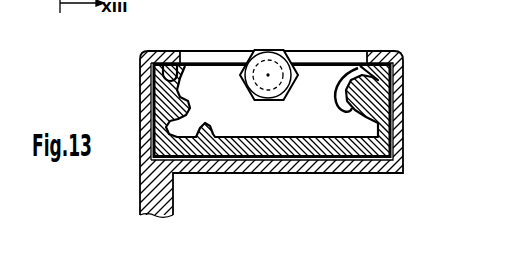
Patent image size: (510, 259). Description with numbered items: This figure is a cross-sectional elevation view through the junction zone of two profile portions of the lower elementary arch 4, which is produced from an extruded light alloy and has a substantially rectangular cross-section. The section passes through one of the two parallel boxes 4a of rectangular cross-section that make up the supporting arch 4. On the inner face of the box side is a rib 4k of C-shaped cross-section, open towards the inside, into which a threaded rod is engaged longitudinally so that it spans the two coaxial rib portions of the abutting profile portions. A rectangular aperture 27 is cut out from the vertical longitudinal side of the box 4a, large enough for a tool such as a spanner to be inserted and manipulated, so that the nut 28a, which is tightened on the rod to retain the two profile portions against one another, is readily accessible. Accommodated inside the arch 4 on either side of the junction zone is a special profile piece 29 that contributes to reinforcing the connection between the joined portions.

The lower elementary arch 4 is at (412, 90).
The box 4a is at (145, 97).
The rib 4k is at (290, 58).
The rectangular aperture 27 is at (348, 50).
The nut 28a is at (252, 50).
The special profile piece 29 is at (384, 142).